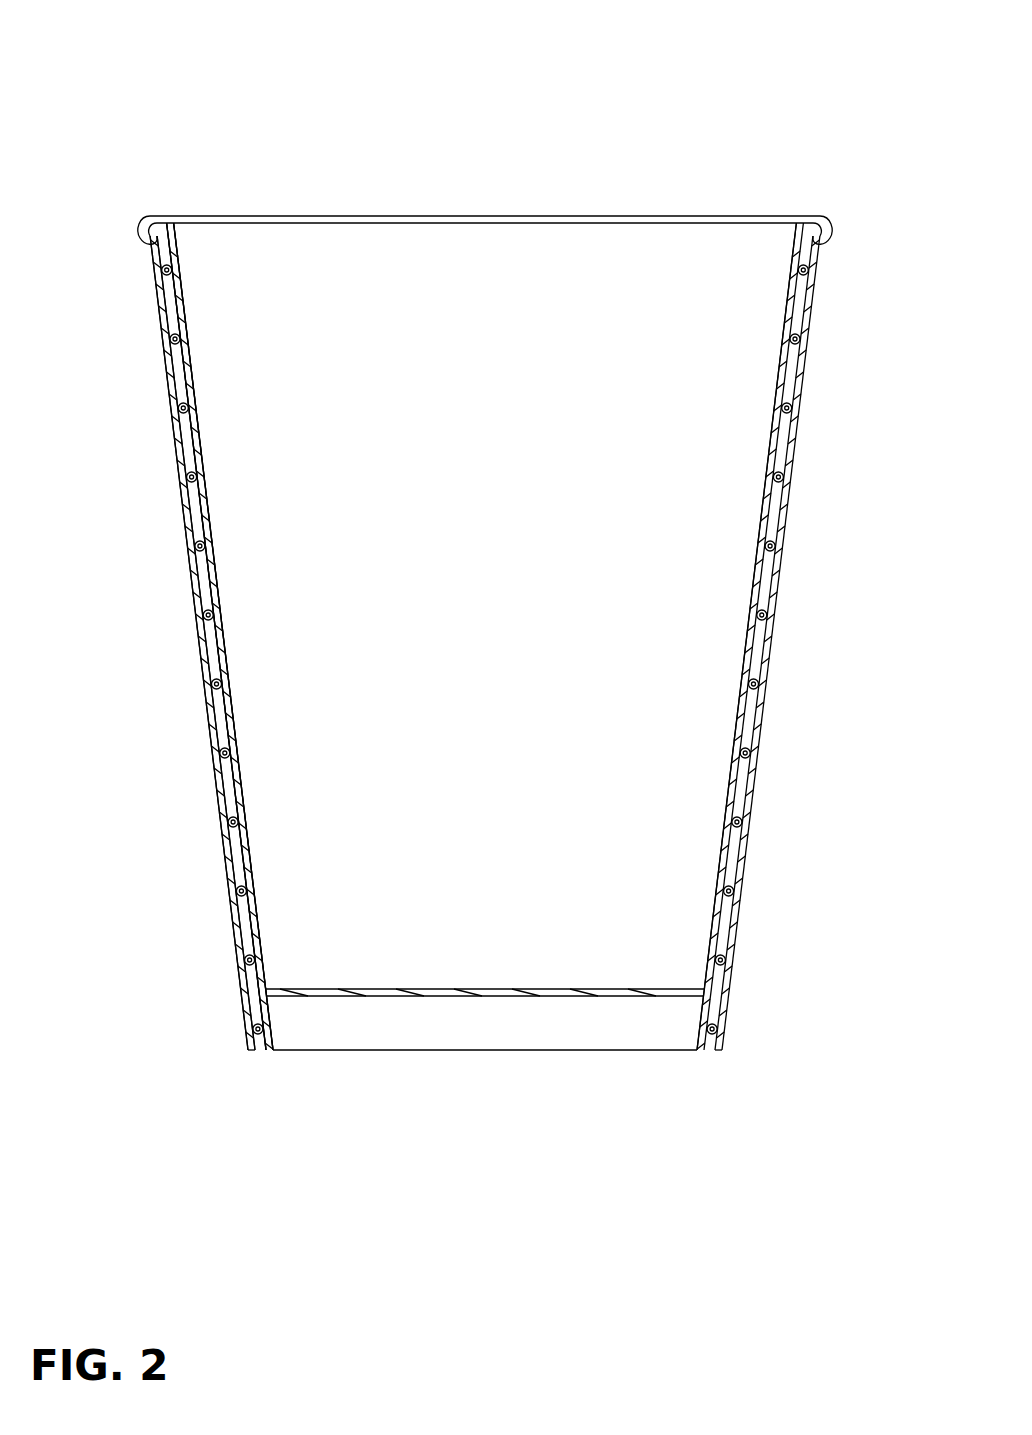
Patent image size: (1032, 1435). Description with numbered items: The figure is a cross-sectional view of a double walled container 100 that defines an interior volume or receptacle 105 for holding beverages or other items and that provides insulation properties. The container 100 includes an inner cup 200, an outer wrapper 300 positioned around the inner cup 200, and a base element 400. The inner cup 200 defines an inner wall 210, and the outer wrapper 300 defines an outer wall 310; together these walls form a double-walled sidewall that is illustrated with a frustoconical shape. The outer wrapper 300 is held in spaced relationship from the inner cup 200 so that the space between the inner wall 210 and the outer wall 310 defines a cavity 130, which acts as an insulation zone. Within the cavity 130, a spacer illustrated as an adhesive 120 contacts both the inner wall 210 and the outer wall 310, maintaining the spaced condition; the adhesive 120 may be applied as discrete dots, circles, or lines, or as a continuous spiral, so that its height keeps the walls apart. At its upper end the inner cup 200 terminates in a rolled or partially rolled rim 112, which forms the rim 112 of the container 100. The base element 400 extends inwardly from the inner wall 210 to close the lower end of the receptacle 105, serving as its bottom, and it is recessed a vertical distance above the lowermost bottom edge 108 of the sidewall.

The double walled container 100 is at (487, 550).
The receptacle 105 is at (448, 470).
The lowermost bottom edge 108 is at (727, 1043).
The rim 112 is at (140, 238).
The adhesive 120 is at (225, 760).
The cavity 130 is at (183, 430).
The inner cup 200 is at (226, 538).
The inner wall 210 is at (225, 615).
The outer wrapper 300 is at (186, 591).
The outer wall 310 is at (185, 510).
The base element 400 is at (388, 988).